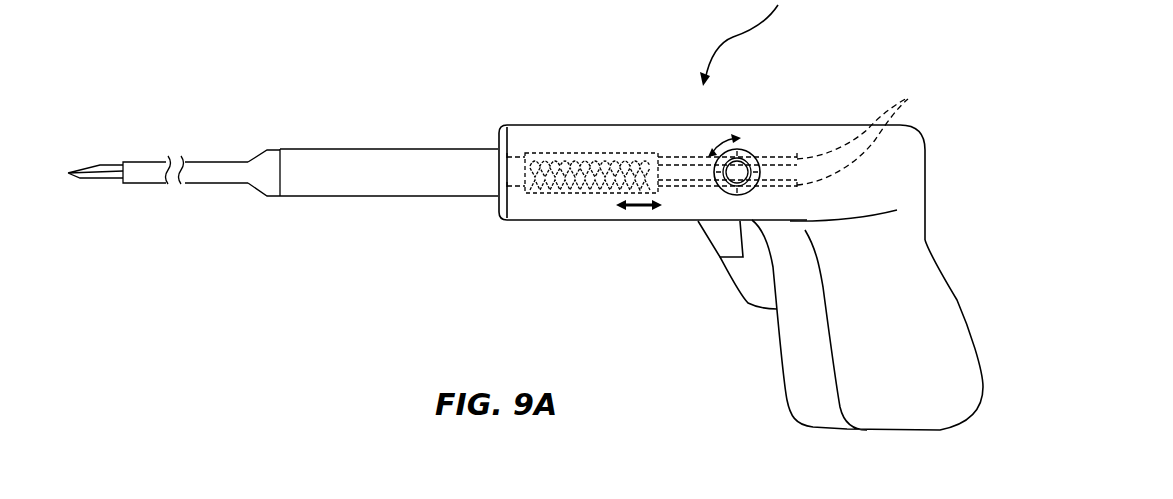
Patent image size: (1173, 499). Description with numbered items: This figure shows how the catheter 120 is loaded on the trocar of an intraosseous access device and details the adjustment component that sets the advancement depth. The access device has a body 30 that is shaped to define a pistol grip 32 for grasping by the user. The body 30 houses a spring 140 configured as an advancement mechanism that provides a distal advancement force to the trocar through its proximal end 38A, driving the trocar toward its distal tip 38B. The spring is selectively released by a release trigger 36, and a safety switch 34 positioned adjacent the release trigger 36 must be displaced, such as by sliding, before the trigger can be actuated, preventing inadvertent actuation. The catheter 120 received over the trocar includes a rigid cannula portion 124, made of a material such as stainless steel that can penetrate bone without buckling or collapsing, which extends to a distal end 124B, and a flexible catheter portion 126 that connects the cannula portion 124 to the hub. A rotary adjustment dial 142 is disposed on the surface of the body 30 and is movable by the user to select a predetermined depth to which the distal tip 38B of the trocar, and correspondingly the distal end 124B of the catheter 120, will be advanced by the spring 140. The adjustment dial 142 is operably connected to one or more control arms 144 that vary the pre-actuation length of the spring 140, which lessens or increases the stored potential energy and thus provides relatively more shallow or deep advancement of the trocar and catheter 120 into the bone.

The body 30 is at (805, 125).
The pistol grip 32 is at (883, 390).
The safety switch 34 is at (713, 222).
The release trigger 36 is at (750, 286).
The proximal end of the trocar 38A is at (530, 160).
The distal tip of the trocar 38B is at (72, 172).
The catheter 120 is at (283, 161).
The cannula portion 124 is at (153, 173).
The distal end of the cannula portion 124B is at (120, 183).
The flexible catheter portion 126 is at (383, 176).
The spring 140 is at (592, 193).
The rotary adjustment dial 142 is at (745, 186).
The control arms 144 is at (875, 132).